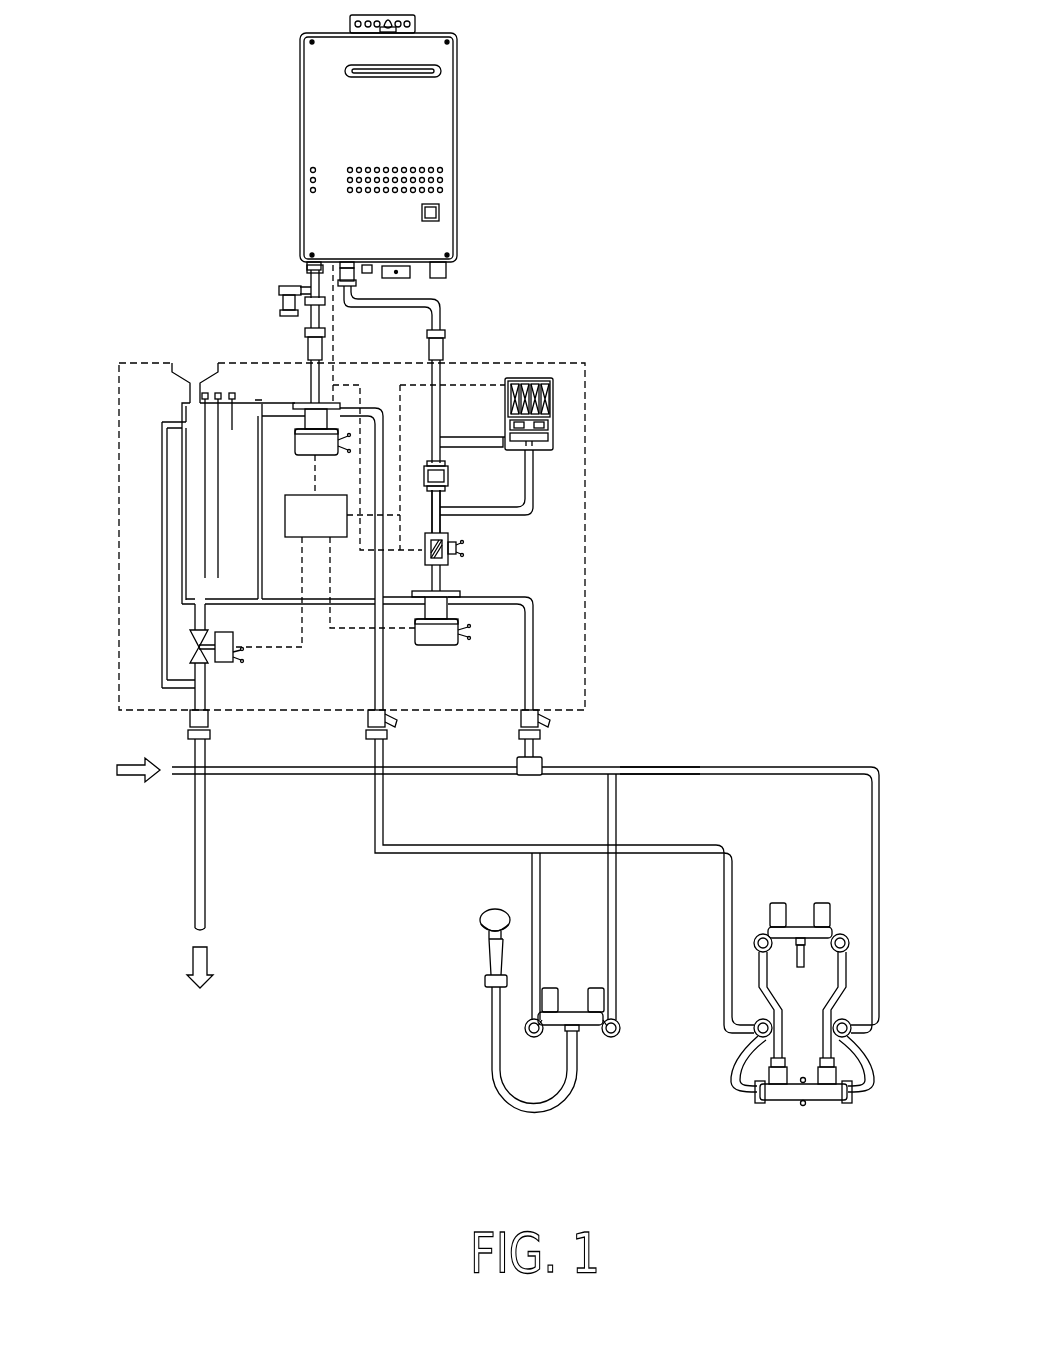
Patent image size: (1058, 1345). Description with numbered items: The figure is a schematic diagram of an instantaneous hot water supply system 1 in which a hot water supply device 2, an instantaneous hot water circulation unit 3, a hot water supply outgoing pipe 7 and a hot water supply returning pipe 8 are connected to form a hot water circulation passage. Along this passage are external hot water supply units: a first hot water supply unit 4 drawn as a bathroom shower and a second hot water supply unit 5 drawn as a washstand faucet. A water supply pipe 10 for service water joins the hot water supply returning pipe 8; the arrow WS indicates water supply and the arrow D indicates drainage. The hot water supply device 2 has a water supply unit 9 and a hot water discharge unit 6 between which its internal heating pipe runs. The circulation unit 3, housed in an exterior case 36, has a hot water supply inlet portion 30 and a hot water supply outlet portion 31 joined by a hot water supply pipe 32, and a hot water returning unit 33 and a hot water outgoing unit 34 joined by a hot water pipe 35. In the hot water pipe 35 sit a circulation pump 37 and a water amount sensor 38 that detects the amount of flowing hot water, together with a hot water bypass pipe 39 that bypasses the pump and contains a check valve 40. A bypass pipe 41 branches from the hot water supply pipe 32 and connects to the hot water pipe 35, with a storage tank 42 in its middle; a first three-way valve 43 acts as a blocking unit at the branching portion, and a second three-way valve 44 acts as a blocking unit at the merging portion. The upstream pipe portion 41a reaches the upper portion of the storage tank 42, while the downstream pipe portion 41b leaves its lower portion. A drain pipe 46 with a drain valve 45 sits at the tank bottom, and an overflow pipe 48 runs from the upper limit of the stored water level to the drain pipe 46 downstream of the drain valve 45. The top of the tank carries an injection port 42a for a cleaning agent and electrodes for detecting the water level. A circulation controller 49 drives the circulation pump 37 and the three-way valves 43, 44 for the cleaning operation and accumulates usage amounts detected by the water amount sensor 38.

The instantaneous hot water supply system 1 is at (244, 82).
The hot water supply device 2 is at (458, 60).
The instantaneous hot water circulation unit 3 is at (562, 338).
The first hot water supply unit 4 is at (462, 965).
The second hot water supply unit 5 is at (800, 898).
The hot water discharge unit 6 is at (300, 285).
The hot water supply outgoing pipe 7 is at (447, 855).
The hot water supply returning pipe 8 is at (708, 768).
The water supply unit 9 is at (432, 300).
The water supply pipe 10 is at (180, 776).
The hot water supply inlet portion 30 is at (308, 343).
The hot water supply outlet portion 31 is at (368, 720).
The hot water supply pipe 32 is at (373, 405).
The hot water returning unit 33 is at (522, 719).
The hot water outgoing unit 34 is at (447, 346).
The hot water pipe 35 is at (540, 495).
The exterior case 36 is at (577, 410).
The circulation pump 37 is at (553, 390).
The water amount sensor 38 is at (450, 536).
The hot water bypass pipe 39 is at (430, 500).
The check valve 40 is at (428, 466).
The bypass pipe 41 is at (280, 610).
The upstream pipe portion 41a is at (268, 400).
The downstream pipe portion 41b is at (352, 607).
The storage tank 42 is at (220, 457).
The injection port 42a is at (205, 378).
The first three-way valve 43 is at (316, 456).
The second three-way valve 44 is at (436, 647).
The drain valve 45 is at (234, 662).
The drain pipe 46 is at (195, 688).
The overflow pipe 48 is at (160, 530).
The circulation controller 49 is at (332, 531).
The water supply arrow WS is at (130, 782).
The drainage arrow D is at (188, 962).